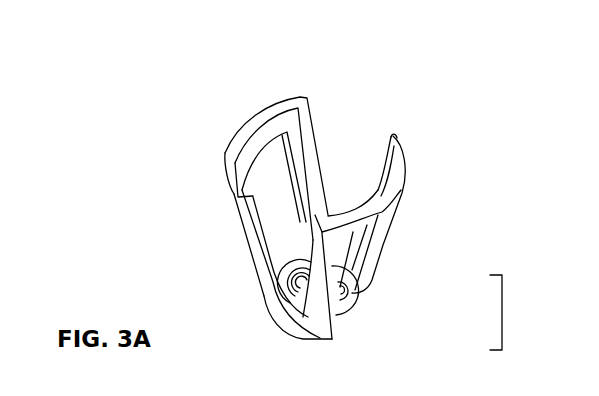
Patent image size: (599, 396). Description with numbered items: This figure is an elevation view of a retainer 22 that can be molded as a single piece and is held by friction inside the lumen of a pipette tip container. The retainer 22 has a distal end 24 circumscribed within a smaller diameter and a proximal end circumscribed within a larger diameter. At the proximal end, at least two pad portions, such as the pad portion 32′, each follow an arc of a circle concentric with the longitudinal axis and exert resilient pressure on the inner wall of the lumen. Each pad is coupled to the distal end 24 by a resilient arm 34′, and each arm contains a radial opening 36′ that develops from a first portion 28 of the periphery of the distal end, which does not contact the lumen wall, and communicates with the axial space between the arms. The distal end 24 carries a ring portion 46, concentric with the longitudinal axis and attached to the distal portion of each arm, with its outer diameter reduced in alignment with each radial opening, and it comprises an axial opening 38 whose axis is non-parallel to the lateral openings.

The retainer 22 is at (135, 95).
The distal end 24 is at (516, 312).
The first portion of a periphery of the distal end 28 is at (342, 315).
The ring portion 46 is at (360, 292).
The pad portion 32′ is at (227, 155).
The resilient arm 34′ is at (255, 257).
The radial opening 36′ is at (270, 185).
The axial opening 38 is at (282, 323).